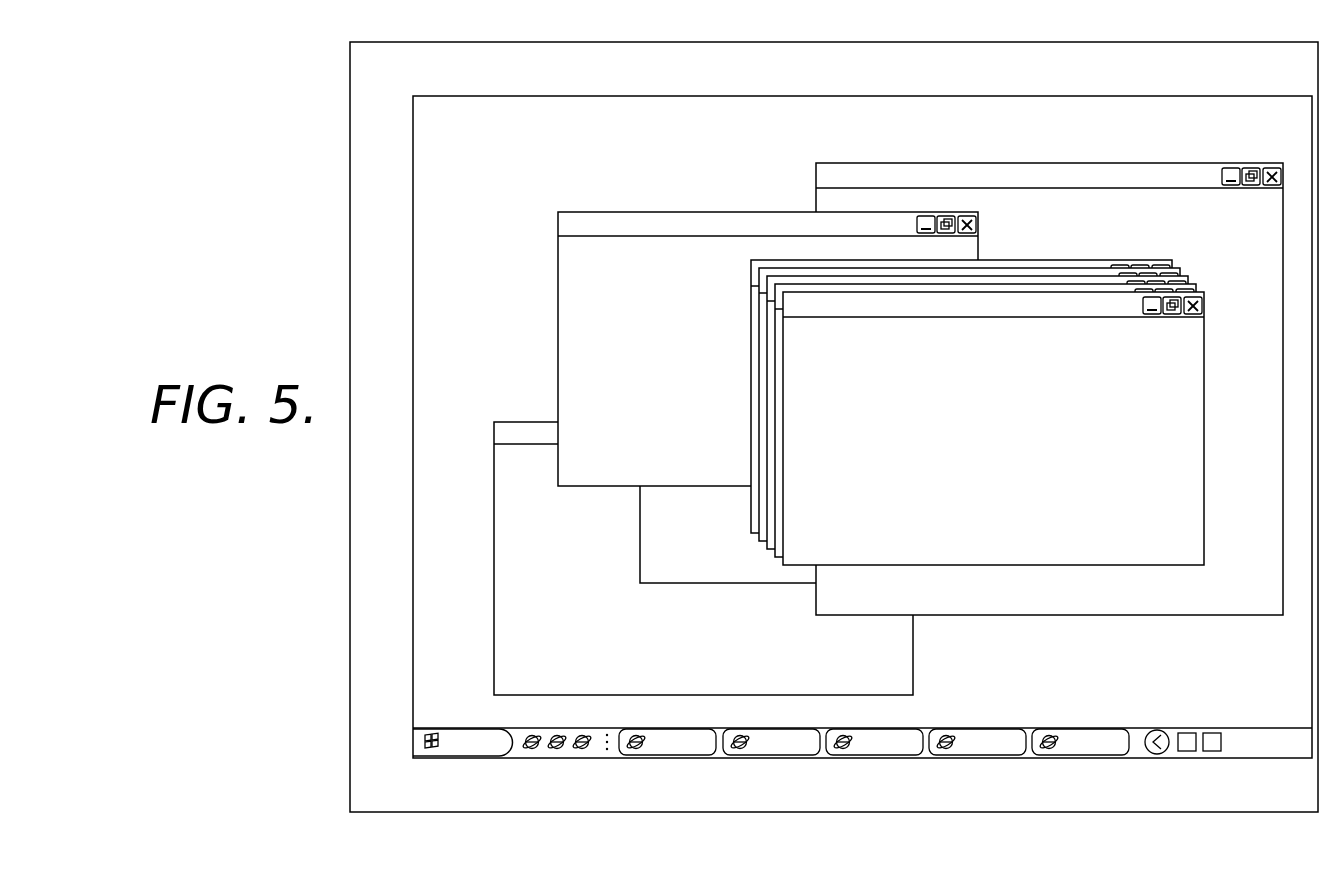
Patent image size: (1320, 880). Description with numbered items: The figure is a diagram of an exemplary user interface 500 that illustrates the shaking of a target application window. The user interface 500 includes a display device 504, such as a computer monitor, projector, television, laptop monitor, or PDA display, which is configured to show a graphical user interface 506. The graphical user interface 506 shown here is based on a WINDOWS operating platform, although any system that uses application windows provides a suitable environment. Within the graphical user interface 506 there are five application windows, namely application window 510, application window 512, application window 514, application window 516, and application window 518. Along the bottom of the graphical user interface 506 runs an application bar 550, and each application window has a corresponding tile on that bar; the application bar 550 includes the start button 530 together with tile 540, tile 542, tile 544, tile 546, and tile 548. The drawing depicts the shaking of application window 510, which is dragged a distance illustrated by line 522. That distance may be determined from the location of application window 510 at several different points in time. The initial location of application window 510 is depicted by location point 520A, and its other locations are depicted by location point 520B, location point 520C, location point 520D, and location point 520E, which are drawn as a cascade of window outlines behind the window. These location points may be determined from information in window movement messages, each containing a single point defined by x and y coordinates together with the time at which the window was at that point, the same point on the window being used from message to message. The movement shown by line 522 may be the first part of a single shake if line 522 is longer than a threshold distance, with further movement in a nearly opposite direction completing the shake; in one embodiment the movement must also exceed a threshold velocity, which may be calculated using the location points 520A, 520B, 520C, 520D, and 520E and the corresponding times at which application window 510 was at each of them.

The user interface 500 is at (248, 97).
The display device 504 is at (344, 226).
The graphical user interface 506 is at (408, 347).
The application window 510 is at (1205, 431).
The application window 512 is at (716, 212).
The application window 514 is at (1014, 163).
The application window 516 is at (718, 583).
The application window 518 is at (535, 422).
The location point 520A is at (989, 292).
The location point 520B is at (984, 291).
The location point 520C is at (972, 268).
The location point 520D is at (969, 267).
The location point 520E is at (966, 265).
The line 522 is at (966, 280).
The start button 530 is at (465, 758).
The tile 540 is at (667, 756).
The tile 542 is at (775, 756).
The tile 544 is at (873, 756).
The tile 546 is at (975, 756).
The tile 548 is at (1078, 756).
The application bar 550 is at (1208, 756).